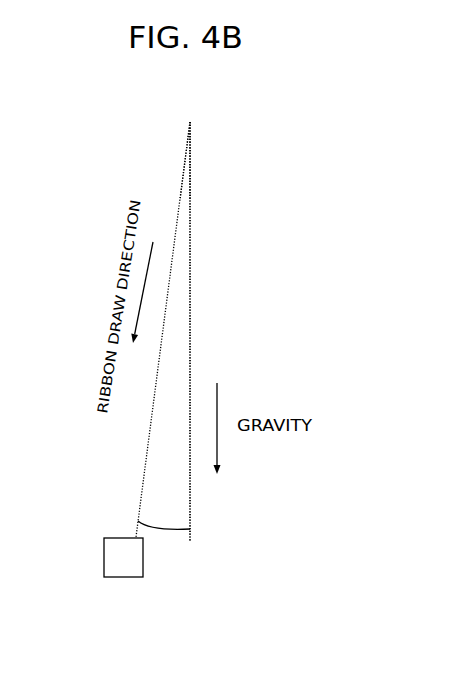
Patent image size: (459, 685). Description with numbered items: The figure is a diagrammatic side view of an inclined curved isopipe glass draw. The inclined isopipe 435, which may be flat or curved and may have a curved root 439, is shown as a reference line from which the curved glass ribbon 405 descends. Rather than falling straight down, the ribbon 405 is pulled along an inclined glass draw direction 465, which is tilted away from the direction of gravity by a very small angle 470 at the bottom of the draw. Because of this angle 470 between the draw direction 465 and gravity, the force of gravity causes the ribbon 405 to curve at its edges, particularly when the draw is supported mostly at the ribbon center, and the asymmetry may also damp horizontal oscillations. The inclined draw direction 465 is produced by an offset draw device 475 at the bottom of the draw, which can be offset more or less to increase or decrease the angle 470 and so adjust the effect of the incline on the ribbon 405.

The curved glass ribbon 405 is at (153, 401).
The inclined isopipe 435 is at (190, 240).
The curved root 439 is at (229, 332).
The inclined glass draw direction 465 is at (150, 155).
The angle 470 is at (158, 539).
The offset draw device 475 is at (118, 587).